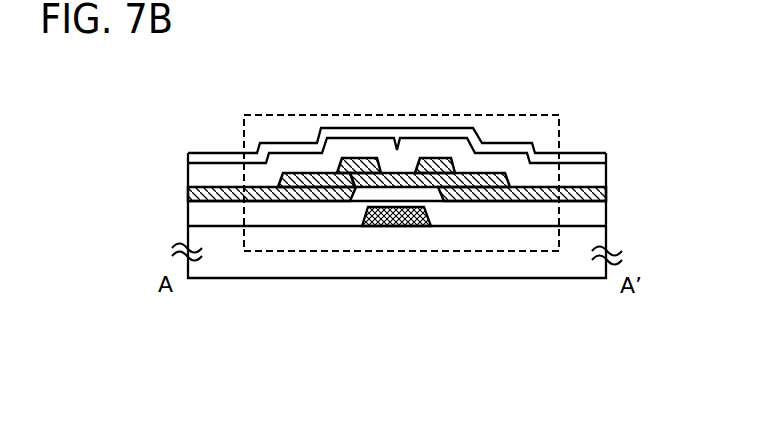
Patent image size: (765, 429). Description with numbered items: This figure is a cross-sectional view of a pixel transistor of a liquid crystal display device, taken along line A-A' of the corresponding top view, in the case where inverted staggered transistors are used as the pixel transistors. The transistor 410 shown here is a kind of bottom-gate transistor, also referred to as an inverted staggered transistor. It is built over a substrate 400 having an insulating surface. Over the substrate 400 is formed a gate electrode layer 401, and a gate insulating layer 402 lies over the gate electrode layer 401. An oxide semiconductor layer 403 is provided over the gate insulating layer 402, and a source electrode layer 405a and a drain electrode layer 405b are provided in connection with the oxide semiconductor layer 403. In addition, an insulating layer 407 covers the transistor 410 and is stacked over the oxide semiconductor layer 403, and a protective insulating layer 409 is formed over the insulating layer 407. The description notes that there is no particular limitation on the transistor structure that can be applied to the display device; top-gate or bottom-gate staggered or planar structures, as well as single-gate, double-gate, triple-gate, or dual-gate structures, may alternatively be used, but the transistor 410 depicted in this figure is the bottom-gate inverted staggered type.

The substrate 400 is at (236, 246).
The gate electrode layer 401 is at (402, 226).
The gate insulating layer 402 is at (485, 207).
The oxide semiconductor layer 403 is at (467, 160).
The source electrode layer 405a is at (340, 160).
The drain electrode layer 405b is at (547, 184).
The insulating layer 407 is at (230, 185).
The protective insulating layer 409 is at (292, 147).
The transistor 410 is at (428, 115).